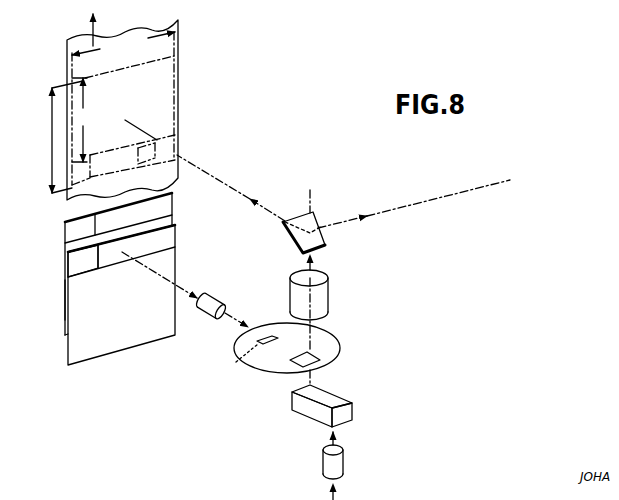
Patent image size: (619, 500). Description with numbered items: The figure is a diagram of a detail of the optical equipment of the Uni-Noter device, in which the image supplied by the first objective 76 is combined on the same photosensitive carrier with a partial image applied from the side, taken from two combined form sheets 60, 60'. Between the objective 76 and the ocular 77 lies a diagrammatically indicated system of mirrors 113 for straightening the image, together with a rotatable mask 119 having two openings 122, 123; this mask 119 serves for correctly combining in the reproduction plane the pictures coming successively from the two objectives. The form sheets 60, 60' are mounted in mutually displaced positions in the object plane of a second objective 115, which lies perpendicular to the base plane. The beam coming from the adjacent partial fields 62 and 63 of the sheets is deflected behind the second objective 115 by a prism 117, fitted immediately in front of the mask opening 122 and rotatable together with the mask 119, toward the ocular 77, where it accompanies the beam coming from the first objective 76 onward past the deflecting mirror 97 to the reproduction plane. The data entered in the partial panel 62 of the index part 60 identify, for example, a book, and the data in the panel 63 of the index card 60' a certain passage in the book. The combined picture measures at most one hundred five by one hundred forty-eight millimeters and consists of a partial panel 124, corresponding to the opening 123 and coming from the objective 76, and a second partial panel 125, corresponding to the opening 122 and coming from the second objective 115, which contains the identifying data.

The partial panel 124 is at (174, 111).
The second partial panel 125 is at (156, 153).
The partial field 63 is at (173, 219).
The partial field 62 is at (76, 262).
The form sheet 60 is at (105, 295).
The form sheet 60' is at (48, 300).
The second objective 115 is at (214, 298).
The mirror 97 is at (314, 214).
The ocular 77 is at (326, 295).
The rotatable mask 119 is at (330, 336).
The mask opening 122 is at (257, 342).
The prism 117 is at (236, 362).
The mask opening 123 is at (323, 362).
The system of mirrors 113 is at (348, 403).
The objective 76 is at (343, 455).